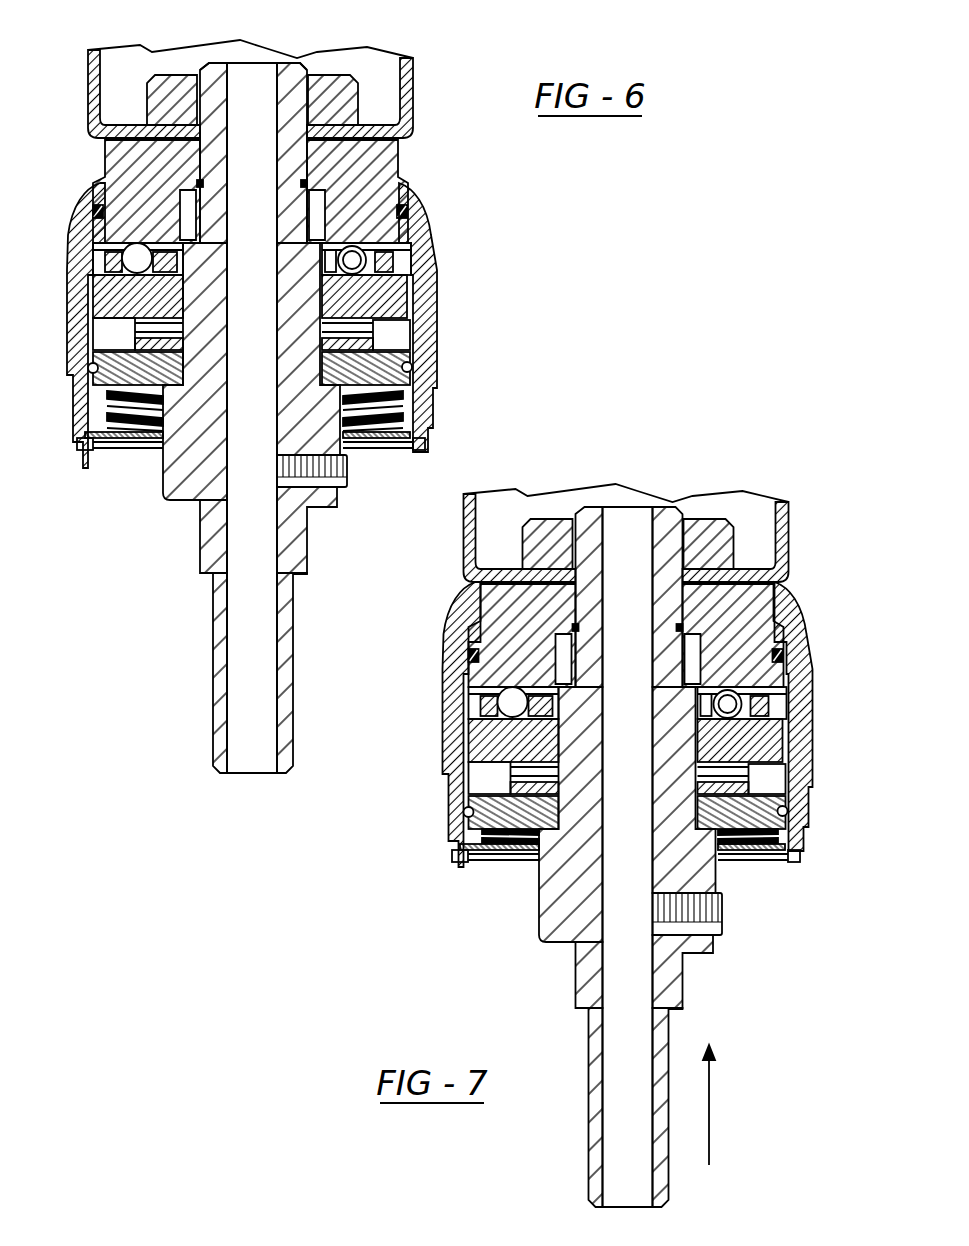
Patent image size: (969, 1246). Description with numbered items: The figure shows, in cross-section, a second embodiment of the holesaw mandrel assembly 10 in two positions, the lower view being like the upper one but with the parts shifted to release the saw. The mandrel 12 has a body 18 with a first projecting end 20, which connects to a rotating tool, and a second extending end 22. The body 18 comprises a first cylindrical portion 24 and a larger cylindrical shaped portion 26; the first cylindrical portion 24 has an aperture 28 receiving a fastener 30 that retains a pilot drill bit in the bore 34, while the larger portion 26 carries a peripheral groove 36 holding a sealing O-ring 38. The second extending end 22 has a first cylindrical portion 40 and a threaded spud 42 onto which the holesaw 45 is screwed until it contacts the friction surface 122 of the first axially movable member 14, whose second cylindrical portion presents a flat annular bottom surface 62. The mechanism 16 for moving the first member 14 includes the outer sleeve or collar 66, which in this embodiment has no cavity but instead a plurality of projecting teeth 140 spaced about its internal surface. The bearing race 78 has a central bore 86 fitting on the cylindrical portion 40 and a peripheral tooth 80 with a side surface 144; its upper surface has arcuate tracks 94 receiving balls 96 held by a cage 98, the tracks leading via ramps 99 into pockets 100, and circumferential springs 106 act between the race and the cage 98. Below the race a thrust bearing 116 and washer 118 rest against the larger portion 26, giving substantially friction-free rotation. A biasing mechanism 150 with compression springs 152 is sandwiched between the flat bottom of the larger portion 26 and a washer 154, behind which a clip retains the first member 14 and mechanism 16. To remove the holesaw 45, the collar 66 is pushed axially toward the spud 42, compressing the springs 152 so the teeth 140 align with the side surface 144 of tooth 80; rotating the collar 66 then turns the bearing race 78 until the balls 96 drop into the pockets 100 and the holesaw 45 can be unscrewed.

In FIG. 6, the holesaw mandrel assembly 10 is at (515, 224).
In FIG. 6, the mandrel 12 is at (313, 598).
In FIG. 7, the mandrel 12 is at (697, 995).
In FIG. 6, the first axially movable member 14 is at (380, 170).
In FIG. 7, the first axially movable member 14 is at (740, 617).
In FIG. 6, the mechanism for moving the first member 16 is at (458, 345).
In FIG. 6, the body 18 is at (153, 507).
In FIG. 6, the first projecting end 20 is at (290, 726).
In FIG. 7, the first projecting end 20 is at (670, 1166).
In FIG. 6, the second extending end 22 is at (305, 157).
In FIG. 6, the first cylindrical portion 24 is at (157, 472).
In FIG. 7, the first cylindrical portion 24 is at (481, 841).
In FIG. 6, the larger cylindrical shaped portion 26 is at (432, 425).
In FIG. 7, the larger cylindrical shaped portion 26 is at (731, 818).
In FIG. 6, the aperture 28 is at (325, 480).
In FIG. 7, the aperture 28 is at (699, 918).
In FIG. 6, the fastener 30 is at (345, 470).
In FIG. 7, the fastener 30 is at (724, 915).
In FIG. 6, the bore 34 is at (270, 66).
In FIG. 6, the peripheral groove 36 is at (411, 350).
In FIG. 6, the sealing O-ring 38 is at (413, 367).
In FIG. 6, the first cylindrical portion 40 is at (407, 265).
In FIG. 6, the threaded spud 42 is at (293, 70).
In FIG. 7, the threaded spud 42 is at (670, 515).
In FIG. 6, the holesaw 45 is at (88, 66).
In FIG. 7, the holesaw 45 is at (787, 531).
In FIG. 6, the flat annular bottom surface 62 is at (407, 250).
In FIG. 7, the outer sleeve or collar 66 is at (799, 653).
In FIG. 6, the bearing race 78 is at (400, 302).
In FIG. 7, the bearing race 78 is at (771, 746).
In FIG. 6, the tooth 80 is at (88, 305).
In FIG. 7, the tooth 80 is at (469, 718).
In FIG. 6, the central bore 86 is at (435, 297).
In FIG. 6, the arcuate tracks 94 is at (128, 286).
In FIG. 6, the balls 96 is at (87, 237).
In FIG. 7, the balls 96 is at (489, 720).
In FIG. 6, the cage 98 is at (428, 258).
In FIG. 7, the cage 98 is at (767, 705).
In FIG. 7, the ramps 99 is at (514, 702).
In FIG. 7, the pockets 100 is at (479, 714).
In FIG. 7, the circumferential springs 106 is at (735, 694).
In FIG. 7, the thrust bearing 116 is at (749, 771).
In FIG. 7, the washer 118 is at (742, 787).
In FIG. 7, the friction surface 122 is at (505, 590).
In FIG. 6, the projecting teeth 140 is at (88, 352).
In FIG. 7, the projecting teeth 140 is at (471, 745).
In FIG. 6, the side surface 144 is at (90, 333).
In FIG. 7, the side surface 144 is at (471, 724).
In FIG. 6, the biasing mechanism 150 is at (97, 433).
In FIG. 7, the biasing mechanism 150 is at (471, 831).
In FIG. 6, the compression springs 152 is at (101, 406).
In FIG. 7, the compression springs 152 is at (471, 835).
In FIG. 6, the washer 154 is at (97, 450).
In FIG. 7, the washer 154 is at (495, 856).